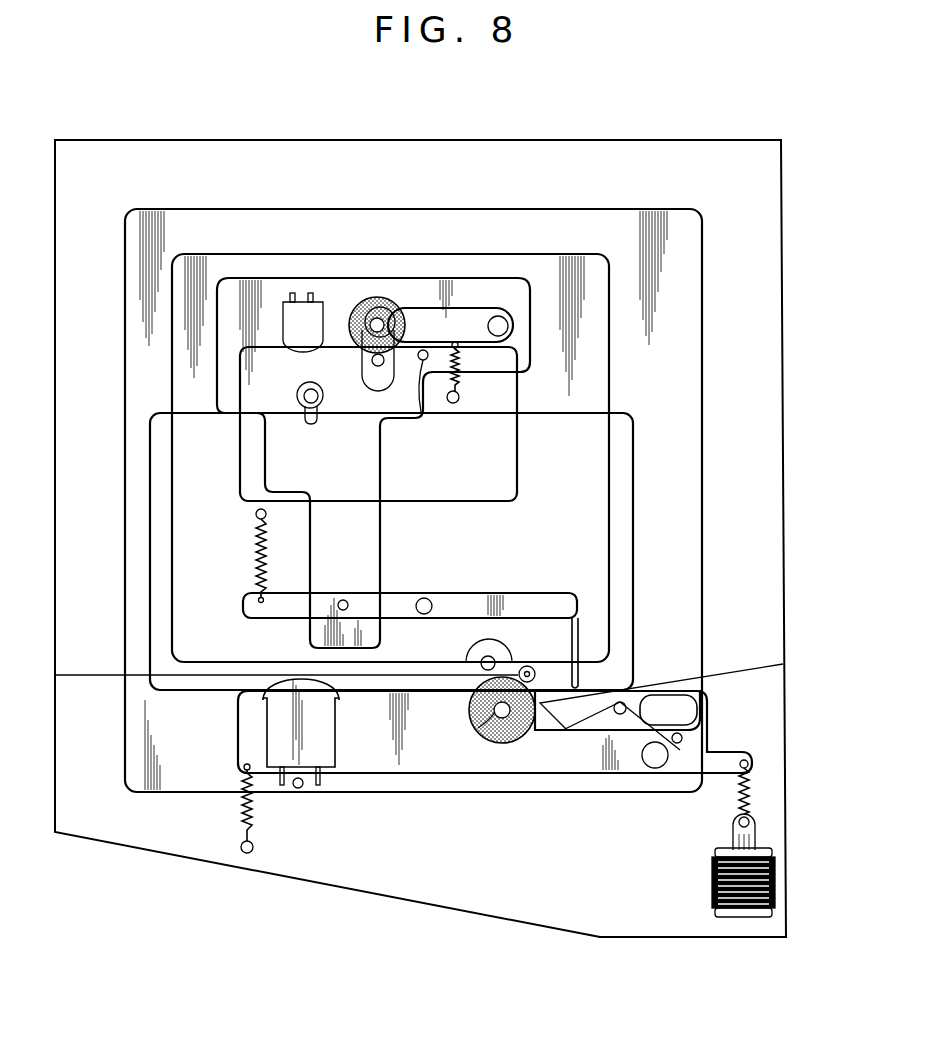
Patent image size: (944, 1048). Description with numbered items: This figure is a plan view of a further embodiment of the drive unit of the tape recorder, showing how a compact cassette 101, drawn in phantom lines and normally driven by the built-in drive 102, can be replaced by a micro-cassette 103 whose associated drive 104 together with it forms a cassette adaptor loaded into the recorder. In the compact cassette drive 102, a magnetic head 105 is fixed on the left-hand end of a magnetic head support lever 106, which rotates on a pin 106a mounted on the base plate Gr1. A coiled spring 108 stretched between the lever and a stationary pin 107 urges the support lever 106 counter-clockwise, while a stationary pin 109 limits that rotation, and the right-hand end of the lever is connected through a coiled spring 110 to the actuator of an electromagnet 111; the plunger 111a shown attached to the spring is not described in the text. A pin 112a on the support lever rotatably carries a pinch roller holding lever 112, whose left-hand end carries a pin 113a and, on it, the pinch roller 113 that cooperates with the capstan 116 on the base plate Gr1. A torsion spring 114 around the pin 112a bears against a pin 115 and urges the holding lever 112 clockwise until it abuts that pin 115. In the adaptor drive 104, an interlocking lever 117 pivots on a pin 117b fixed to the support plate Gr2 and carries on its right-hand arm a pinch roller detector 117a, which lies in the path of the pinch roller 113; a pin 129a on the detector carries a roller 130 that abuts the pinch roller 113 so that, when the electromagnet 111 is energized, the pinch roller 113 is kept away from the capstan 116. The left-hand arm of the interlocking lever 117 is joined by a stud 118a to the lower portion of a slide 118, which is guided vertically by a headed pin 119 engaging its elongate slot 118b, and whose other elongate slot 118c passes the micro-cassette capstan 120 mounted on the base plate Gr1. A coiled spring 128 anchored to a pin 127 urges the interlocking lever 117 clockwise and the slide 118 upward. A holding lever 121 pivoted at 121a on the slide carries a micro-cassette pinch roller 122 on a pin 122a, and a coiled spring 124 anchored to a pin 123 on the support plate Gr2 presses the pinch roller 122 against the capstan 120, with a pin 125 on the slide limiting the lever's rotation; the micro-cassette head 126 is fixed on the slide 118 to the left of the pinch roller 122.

The compact cassette 101 is at (633, 470).
The drive 102 is at (370, 900).
The micro-cassette 103 is at (518, 472).
The drive 104 is at (415, 139).
The magnetic head 105 is at (333, 760).
The magnetic head support lever 106 is at (460, 773).
The pin 106a is at (655, 768).
The stationary pin 107 is at (253, 848).
The coiled spring 108 is at (242, 812).
The stationary pin 109 is at (298, 788).
The coiled spring 110 is at (739, 790).
The electromagnet 111 is at (712, 880).
The plunger 111a is at (733, 836).
The pinch roller holding lever 112 is at (540, 735).
The pin 112a is at (585, 728).
The pinch roller 113 is at (469, 713).
The pin 113a is at (483, 730).
The torsion spring 114 is at (697, 702).
The pin 115 is at (683, 737).
The capstan 116 is at (482, 658).
The interlocking lever 117 is at (467, 598).
The pinch roller detector 117a is at (540, 662).
The pin 117b is at (420, 600).
The slide 118 is at (265, 468).
The stud 118a is at (338, 608).
The slot 118b is at (312, 424).
The elongate slot 118c is at (371, 388).
The headed pin 119 is at (298, 390).
The micro-cassette capstan 120 is at (372, 362).
The holding lever 121 is at (465, 310).
The pivot 121a is at (508, 330).
The micro-cassette pinch roller 122 is at (372, 298).
The pin 122a is at (386, 312).
The pin 123 is at (457, 403).
The coiled spring 124 is at (462, 372).
The pin 125 is at (421, 415).
The micro-cassette head 126 is at (319, 320).
The pin 127 is at (256, 516).
The coiled spring 128 is at (256, 546).
The pin 129a is at (615, 682).
The roller 130 is at (524, 667).
The base plate Gr1 is at (702, 352).
The support plate Gr2 is at (602, 264).